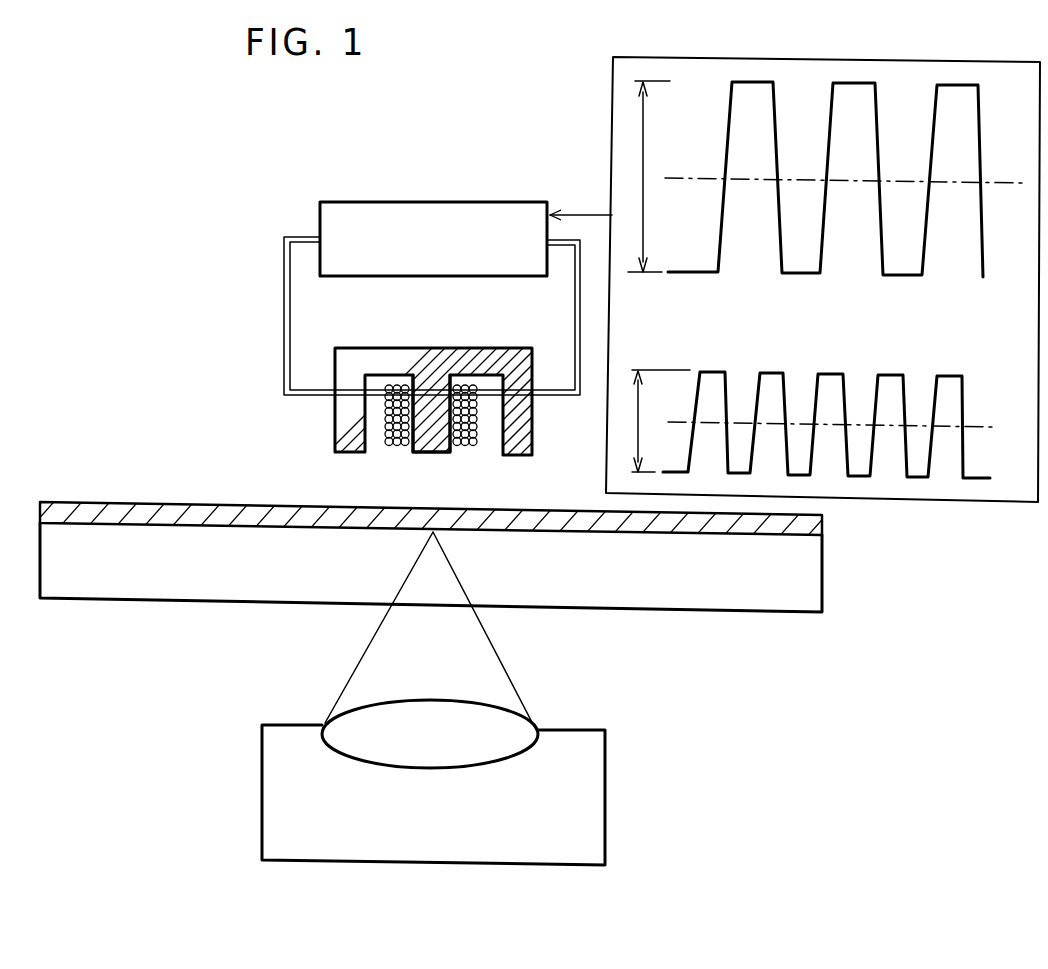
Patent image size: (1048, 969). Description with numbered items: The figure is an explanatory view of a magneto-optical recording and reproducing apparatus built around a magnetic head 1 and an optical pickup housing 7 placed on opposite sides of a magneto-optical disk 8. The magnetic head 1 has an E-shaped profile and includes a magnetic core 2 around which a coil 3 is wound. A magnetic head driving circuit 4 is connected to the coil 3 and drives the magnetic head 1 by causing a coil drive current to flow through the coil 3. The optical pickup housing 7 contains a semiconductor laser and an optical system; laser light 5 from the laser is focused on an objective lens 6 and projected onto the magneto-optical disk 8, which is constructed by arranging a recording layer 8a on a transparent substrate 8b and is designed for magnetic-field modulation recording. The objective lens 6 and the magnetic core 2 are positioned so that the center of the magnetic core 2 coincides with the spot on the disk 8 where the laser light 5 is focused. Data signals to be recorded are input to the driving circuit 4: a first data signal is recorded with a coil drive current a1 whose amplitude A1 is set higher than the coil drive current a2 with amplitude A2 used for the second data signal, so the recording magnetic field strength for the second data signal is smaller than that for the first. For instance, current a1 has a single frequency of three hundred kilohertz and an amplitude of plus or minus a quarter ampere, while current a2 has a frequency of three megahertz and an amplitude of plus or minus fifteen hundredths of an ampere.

The magnetic head 1 is at (540, 436).
The magnetic core 2 is at (427, 448).
The coil 3 is at (470, 446).
The magnetic head driving circuit 4 is at (484, 202).
The laser light 5 is at (510, 672).
The objective lens 6 is at (430, 768).
The optical pickup housing 7 is at (262, 808).
The magneto-optical disk 8 is at (455, 554).
The recording layer 8a is at (822, 524).
The transparent substrate 8b is at (822, 596).
The coil drive current a1 is at (980, 138).
The coil drive current a2 is at (962, 413).
The amplitude A1 is at (649, 176).
The amplitude A2 is at (654, 421).